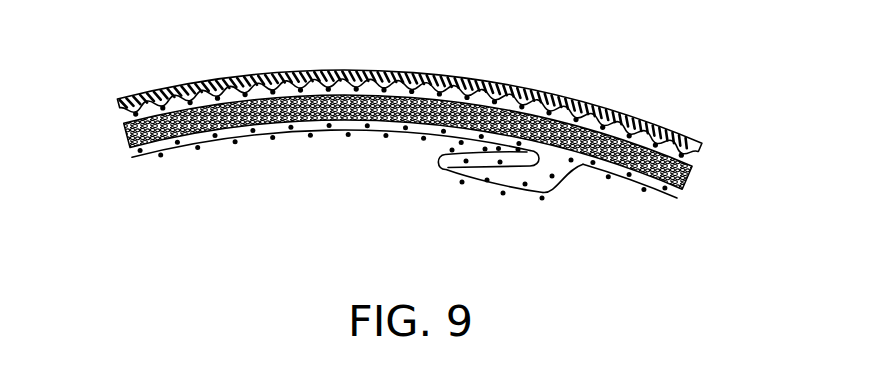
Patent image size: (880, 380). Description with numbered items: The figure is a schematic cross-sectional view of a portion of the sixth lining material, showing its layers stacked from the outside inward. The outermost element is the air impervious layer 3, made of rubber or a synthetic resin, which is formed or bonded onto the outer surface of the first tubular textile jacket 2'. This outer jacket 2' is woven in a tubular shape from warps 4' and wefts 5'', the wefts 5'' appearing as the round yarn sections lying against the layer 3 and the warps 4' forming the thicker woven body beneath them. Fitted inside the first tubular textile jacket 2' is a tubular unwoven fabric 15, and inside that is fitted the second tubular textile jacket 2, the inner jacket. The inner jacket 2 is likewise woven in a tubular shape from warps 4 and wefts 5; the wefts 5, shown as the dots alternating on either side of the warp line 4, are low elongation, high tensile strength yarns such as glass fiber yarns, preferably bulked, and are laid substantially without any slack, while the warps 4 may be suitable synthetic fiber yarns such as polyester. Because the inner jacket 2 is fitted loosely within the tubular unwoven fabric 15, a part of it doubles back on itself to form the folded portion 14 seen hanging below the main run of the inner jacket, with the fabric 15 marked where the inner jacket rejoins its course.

The second tubular textile jacket 2 is at (407, 187).
The first tubular textile jacket 2' is at (406, 144).
The air impervious layer 3 is at (392, 70).
The warps 4 is at (404, 164).
The warps 4' is at (408, 98).
The wefts 5 is at (403, 175).
The wefts 5'' is at (408, 82).
The folded portion 14 is at (486, 193).
The tubular unwoven fabric 15 is at (585, 155).